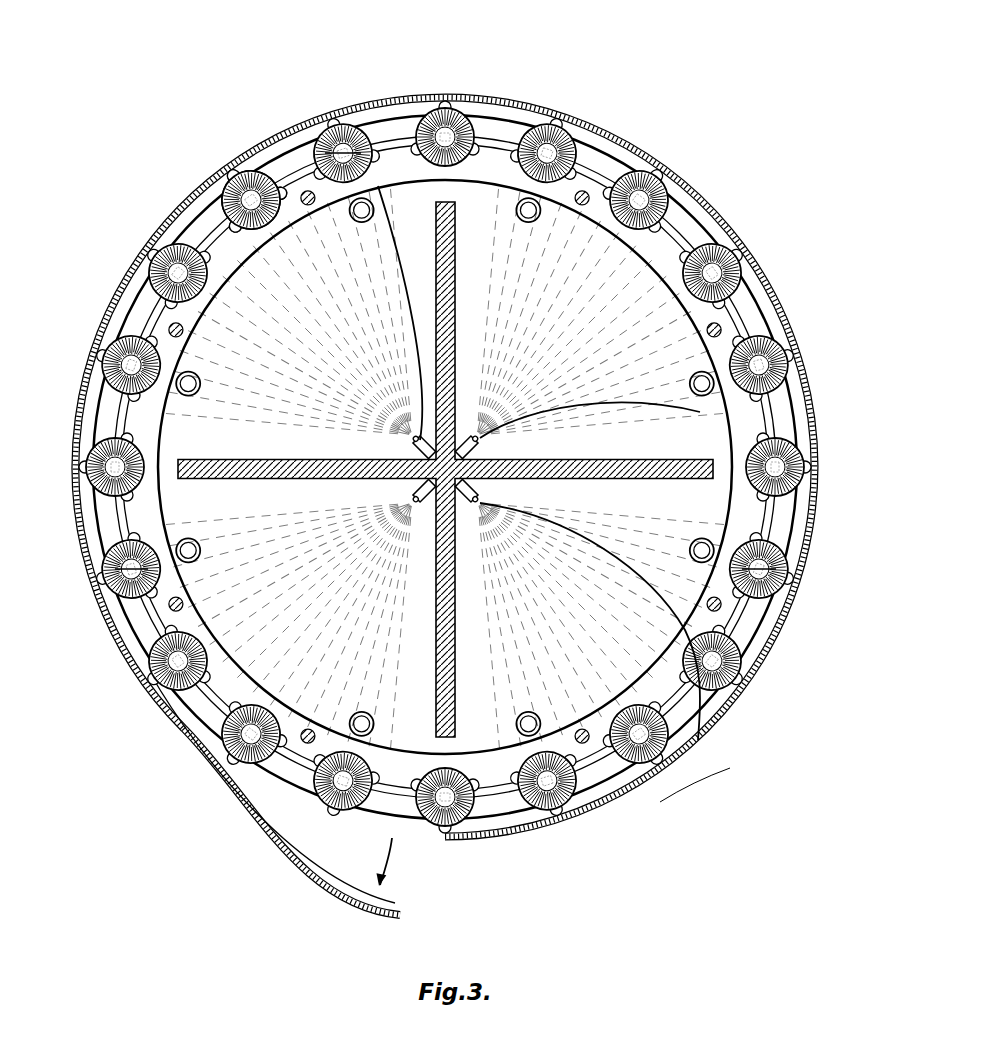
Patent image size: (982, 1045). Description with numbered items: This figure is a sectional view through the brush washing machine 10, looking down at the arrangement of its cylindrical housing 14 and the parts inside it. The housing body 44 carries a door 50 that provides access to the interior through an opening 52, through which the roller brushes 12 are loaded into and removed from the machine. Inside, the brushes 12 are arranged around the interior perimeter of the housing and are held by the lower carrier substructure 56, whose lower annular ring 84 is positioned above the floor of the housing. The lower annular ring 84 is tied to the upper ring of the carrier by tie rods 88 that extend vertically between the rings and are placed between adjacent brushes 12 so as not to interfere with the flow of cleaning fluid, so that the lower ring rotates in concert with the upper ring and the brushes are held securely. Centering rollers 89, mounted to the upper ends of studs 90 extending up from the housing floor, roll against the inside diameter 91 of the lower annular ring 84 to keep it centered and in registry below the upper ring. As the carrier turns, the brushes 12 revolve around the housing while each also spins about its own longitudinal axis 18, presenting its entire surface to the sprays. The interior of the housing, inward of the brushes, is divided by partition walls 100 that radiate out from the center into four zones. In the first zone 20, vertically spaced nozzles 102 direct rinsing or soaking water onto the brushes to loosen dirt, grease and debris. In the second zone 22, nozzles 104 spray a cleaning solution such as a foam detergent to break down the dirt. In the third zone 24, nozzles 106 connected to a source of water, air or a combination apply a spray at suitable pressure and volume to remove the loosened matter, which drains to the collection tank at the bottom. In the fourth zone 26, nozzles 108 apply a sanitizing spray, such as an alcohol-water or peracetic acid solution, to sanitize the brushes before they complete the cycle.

The washing machine apparatus 10 is at (102, 132).
The roller brushes 12 is at (580, 146).
The cylindrical housing 14 is at (532, 97).
The longitudinal axis 18 is at (342, 165).
The first zone 20 is at (700, 745).
The second zone 22 is at (652, 290).
The third zone 24 is at (237, 287).
The fourth zone 26 is at (252, 648).
The housing body 44 is at (100, 552).
The door 50 is at (313, 877).
The opening 52 is at (410, 860).
The lower carrier substructure 56 is at (288, 792).
The lower annular ring 84 is at (708, 242).
The tie rods 88 is at (176, 325).
The centering rollers 89 is at (182, 387).
The studs 90 is at (150, 373).
The inside diameter 91 is at (170, 420).
The partition walls 100 is at (453, 240).
The nozzles 102 is at (636, 646).
The nozzles 104 is at (700, 412).
The nozzles 106 is at (275, 222).
The nozzles 108 is at (178, 625).